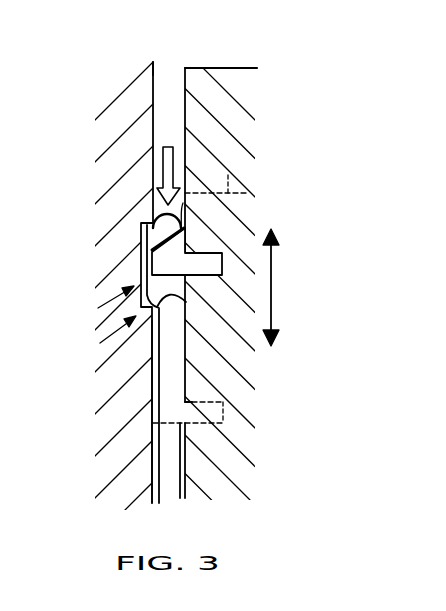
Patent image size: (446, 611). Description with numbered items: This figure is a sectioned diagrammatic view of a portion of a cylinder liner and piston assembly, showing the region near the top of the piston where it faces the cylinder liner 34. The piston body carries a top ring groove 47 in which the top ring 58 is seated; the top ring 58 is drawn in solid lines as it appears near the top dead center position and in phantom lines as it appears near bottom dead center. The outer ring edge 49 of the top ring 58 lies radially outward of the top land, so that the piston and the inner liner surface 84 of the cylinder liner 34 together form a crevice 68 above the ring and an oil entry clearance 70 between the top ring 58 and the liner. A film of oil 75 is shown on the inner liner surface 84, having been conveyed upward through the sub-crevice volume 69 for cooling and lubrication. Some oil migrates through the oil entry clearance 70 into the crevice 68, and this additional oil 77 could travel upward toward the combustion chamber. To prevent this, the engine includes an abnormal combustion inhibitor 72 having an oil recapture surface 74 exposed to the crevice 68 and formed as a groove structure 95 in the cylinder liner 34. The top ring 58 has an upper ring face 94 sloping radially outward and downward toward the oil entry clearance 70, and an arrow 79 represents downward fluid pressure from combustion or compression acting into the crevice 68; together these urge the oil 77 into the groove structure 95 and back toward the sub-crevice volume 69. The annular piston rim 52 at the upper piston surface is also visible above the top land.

The cylinder liner 34 is at (124, 127).
The annular piston rim 52 is at (223, 68).
The inner liner surface 84 is at (154, 70).
The crevice 68 is at (166, 90).
The arrow 79 is at (159, 162).
The top ring 58 is at (212, 244).
The upper ring face 94 is at (205, 195).
The top ring groove 47 is at (186, 226).
The additional oil 77 is at (153, 216).
The outer ring edge 49 is at (146, 244).
The oil recapture surface 74 is at (142, 277).
The film of oil 75 is at (187, 287).
The groove structure 95 is at (100, 308).
The abnormal combustion inhibitor 72 is at (102, 343).
The sub-crevice volume 69 is at (165, 375).
The oil entry clearance 70 is at (183, 382).